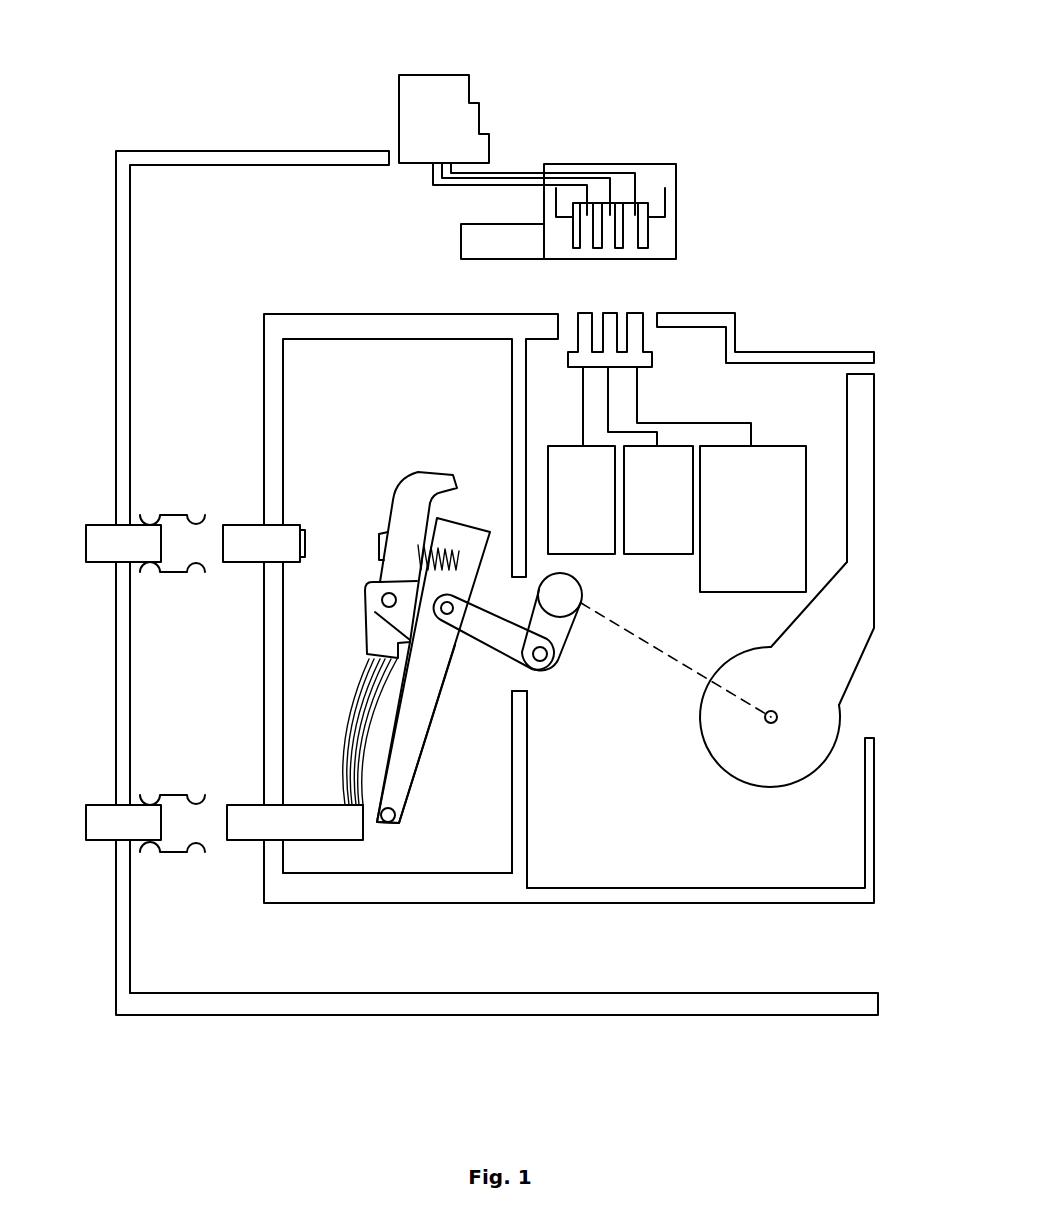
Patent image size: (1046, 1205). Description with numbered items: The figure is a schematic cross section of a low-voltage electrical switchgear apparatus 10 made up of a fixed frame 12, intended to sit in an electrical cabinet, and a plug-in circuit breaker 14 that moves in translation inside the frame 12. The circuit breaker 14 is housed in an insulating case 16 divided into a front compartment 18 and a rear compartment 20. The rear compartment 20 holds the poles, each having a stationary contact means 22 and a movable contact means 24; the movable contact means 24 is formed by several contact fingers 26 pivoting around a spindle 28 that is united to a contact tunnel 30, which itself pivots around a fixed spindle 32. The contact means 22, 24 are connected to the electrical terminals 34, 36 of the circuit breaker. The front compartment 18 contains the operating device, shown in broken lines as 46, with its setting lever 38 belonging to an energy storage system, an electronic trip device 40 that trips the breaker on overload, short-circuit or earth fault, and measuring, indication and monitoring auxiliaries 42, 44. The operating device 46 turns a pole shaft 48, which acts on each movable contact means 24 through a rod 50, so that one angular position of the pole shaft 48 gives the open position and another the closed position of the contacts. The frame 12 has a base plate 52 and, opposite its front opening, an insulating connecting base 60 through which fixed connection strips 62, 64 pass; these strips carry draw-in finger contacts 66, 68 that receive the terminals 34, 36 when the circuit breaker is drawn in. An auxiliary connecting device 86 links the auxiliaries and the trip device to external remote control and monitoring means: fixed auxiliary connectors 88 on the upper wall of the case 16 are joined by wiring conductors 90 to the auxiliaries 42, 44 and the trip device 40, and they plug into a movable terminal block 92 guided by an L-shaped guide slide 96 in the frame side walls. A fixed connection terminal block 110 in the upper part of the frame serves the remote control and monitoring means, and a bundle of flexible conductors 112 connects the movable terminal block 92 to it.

The low-voltage electrical switchgear apparatus 10 is at (489, 517).
The fixed frame 12 is at (140, 271).
The plug-in circuit breaker 14 is at (786, 316).
The case 16 is at (347, 323).
The front compartment 18 is at (555, 868).
The rear compartment 20 is at (376, 861).
The stationary contact means 22 is at (312, 550).
The movable contact means 24 is at (445, 718).
The contact fingers 26 is at (400, 517).
The spindle 28 is at (383, 602).
The contact tunnel 30 is at (412, 752).
The fixed spindle 32 is at (393, 822).
The electrical terminal 34 is at (250, 535).
The electrical terminal 36 is at (250, 817).
The setting lever 38 is at (860, 566).
The electronic trip device 40 is at (753, 519).
The electrical measuring, indication and monitoring auxiliary 42 is at (658, 500).
The electrical measuring, indication and monitoring auxiliary 44 is at (581, 500).
The operating device 46 is at (665, 655).
The pole shaft 48 is at (562, 594).
The rod 50 is at (470, 630).
The base plate 52 is at (296, 1002).
The insulating connecting base 60 is at (120, 285).
The fixed connection strip 62 is at (100, 543).
The fixed connection strip 64 is at (100, 822).
The draw-in finger contact 66 is at (172, 512).
The draw-in finger contact 68 is at (172, 800).
The auxiliary connecting device 86 is at (621, 348).
The fixed auxiliary connectors 88 is at (582, 314).
The wiring conductors 90 is at (583, 413).
The movable terminal block 92 is at (648, 189).
The L-shaped guide slide 96 is at (483, 237).
The fixed connection terminal block 110 is at (492, 89).
The bundle of flexible conductors 112 is at (520, 170).